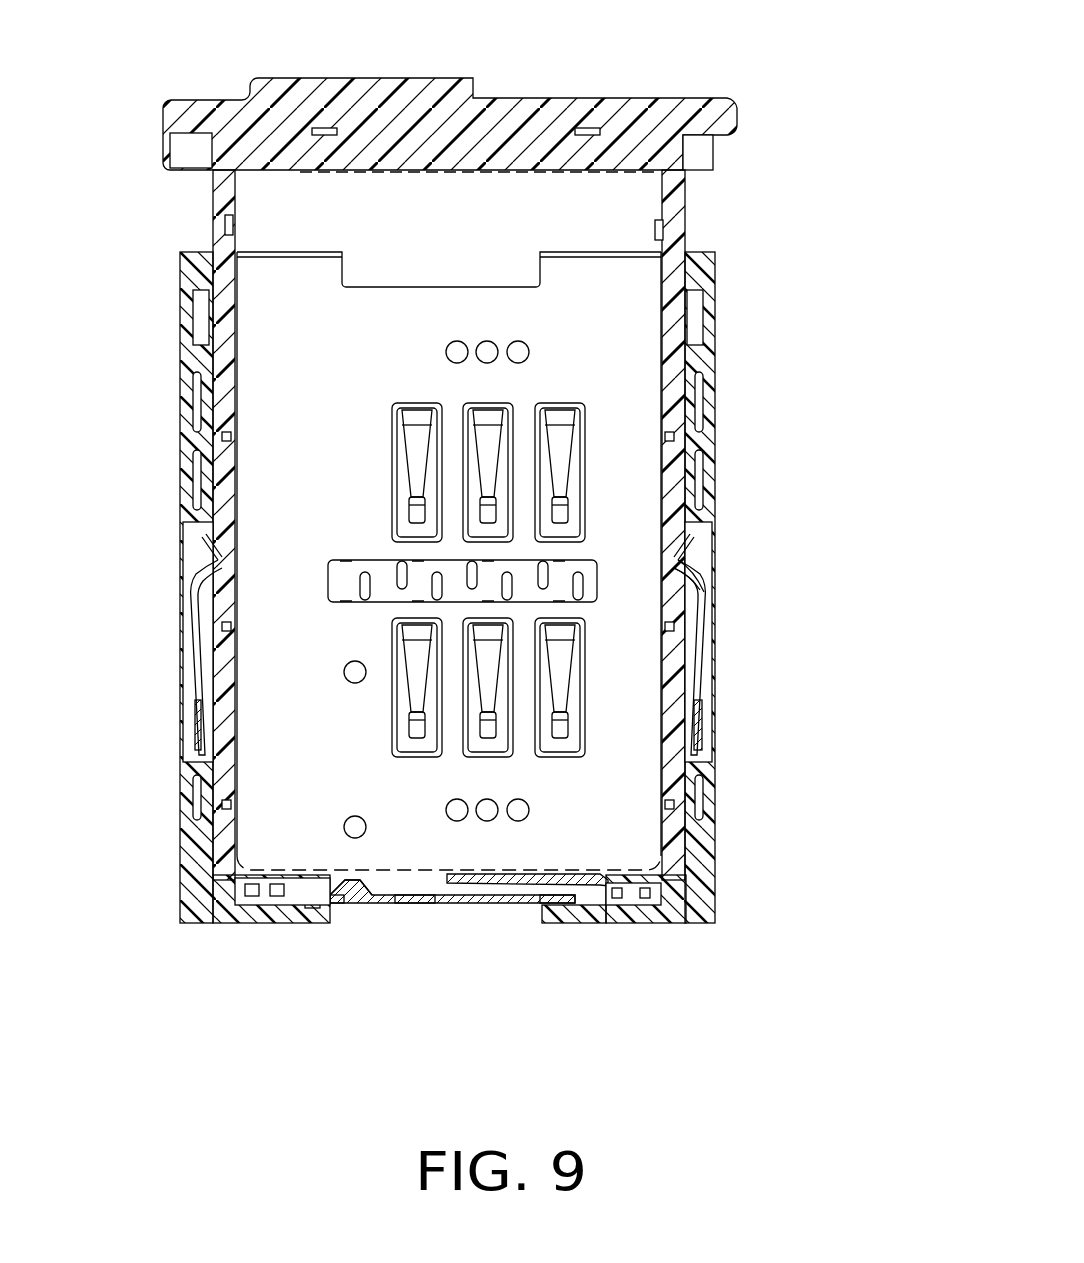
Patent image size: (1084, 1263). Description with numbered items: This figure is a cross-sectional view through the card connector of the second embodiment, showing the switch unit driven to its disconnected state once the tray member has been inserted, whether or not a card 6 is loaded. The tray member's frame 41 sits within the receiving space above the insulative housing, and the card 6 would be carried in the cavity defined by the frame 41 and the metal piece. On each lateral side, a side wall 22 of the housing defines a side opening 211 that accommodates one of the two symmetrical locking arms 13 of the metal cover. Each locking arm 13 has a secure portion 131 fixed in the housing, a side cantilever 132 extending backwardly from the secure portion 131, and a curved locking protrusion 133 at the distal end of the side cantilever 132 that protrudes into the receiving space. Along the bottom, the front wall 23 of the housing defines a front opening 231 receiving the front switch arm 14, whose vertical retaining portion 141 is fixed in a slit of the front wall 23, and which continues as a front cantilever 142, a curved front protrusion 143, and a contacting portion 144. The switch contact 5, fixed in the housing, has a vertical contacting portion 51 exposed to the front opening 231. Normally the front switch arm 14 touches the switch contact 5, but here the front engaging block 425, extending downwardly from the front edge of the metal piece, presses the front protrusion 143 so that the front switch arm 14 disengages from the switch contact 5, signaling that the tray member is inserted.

The frame 41 is at (633, 135).
The card 6 is at (617, 223).
The side wall 22 is at (196, 358).
The side opening 211 is at (777, 545).
The locking arm 13 is at (196, 657).
The secure portion 131 is at (698, 732).
The side cantilever 132 is at (700, 662).
The locking protrusion 133 is at (705, 593).
The front engaging block 425 is at (343, 873).
The switch contact 5 is at (292, 898).
The vertical contacting portion 51 is at (308, 905).
The contacting portion 144 is at (345, 905).
The front protrusion 143 is at (358, 887).
The front cantilever 142 is at (413, 903).
The front switch arm 14 is at (443, 905).
The front opening 231 is at (467, 912).
The vertical retaining portion 141 is at (553, 902).
The front wall 23 is at (643, 912).